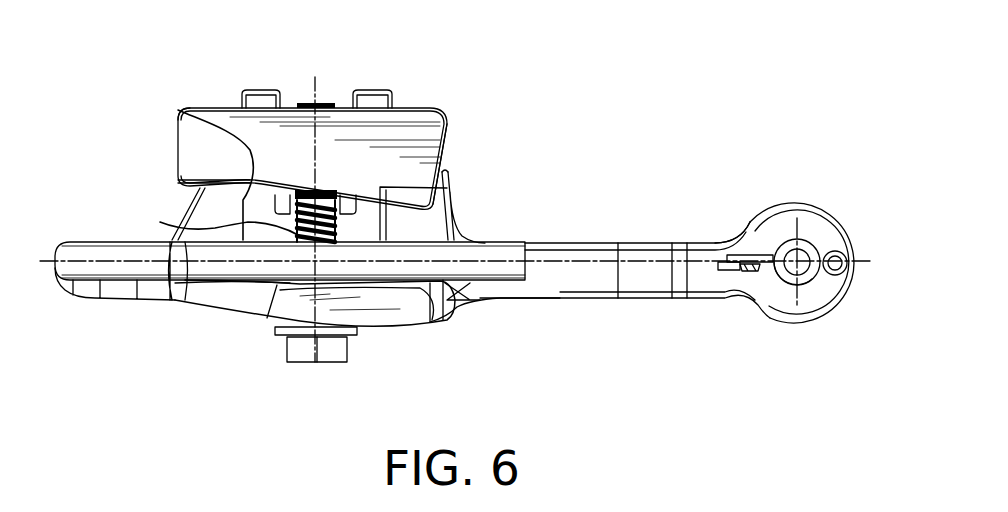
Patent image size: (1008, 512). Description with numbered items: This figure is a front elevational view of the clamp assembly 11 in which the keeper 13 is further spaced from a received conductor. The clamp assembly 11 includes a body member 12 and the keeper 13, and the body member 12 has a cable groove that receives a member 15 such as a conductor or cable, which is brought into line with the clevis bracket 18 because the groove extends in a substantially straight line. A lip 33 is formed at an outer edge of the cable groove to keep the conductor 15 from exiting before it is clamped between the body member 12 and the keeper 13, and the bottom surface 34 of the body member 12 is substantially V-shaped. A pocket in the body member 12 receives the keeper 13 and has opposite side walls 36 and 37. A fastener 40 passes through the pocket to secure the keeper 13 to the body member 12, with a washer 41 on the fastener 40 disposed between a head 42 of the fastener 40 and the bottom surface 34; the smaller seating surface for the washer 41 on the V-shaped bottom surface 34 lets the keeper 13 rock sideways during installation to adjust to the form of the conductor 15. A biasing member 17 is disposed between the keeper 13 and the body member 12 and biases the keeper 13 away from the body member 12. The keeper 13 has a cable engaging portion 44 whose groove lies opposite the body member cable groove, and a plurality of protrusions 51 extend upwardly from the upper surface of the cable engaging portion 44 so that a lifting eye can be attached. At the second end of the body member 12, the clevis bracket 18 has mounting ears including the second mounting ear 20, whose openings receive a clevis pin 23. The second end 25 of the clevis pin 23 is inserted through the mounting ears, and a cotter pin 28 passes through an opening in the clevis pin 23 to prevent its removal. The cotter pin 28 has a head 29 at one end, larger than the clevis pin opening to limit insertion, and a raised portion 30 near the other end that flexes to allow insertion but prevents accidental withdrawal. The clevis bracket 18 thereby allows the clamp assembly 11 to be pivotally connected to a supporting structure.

The clamp assembly 11 is at (528, 133).
The body member 12 is at (572, 238).
The keeper 13 is at (432, 100).
The member 15 is at (518, 280).
The biasing member 17 is at (247, 220).
The clevis bracket 18 is at (732, 232).
The second mounting ear 20 is at (842, 302).
The clevis pin 23 is at (803, 238).
The second end 25 is at (812, 279).
The cotter pin 28 is at (757, 255).
The head 29 is at (843, 252).
The raised portion 30 is at (732, 289).
The lip 33 is at (228, 245).
The bottom surface 34 is at (240, 316).
The side wall 36 is at (447, 188).
The side wall 37 is at (182, 115).
The fastener 40 is at (322, 100).
The washer 41 is at (353, 336).
The head 42 is at (347, 358).
The cable engaging portion 44 is at (455, 139).
The protrusions 51 is at (370, 90).